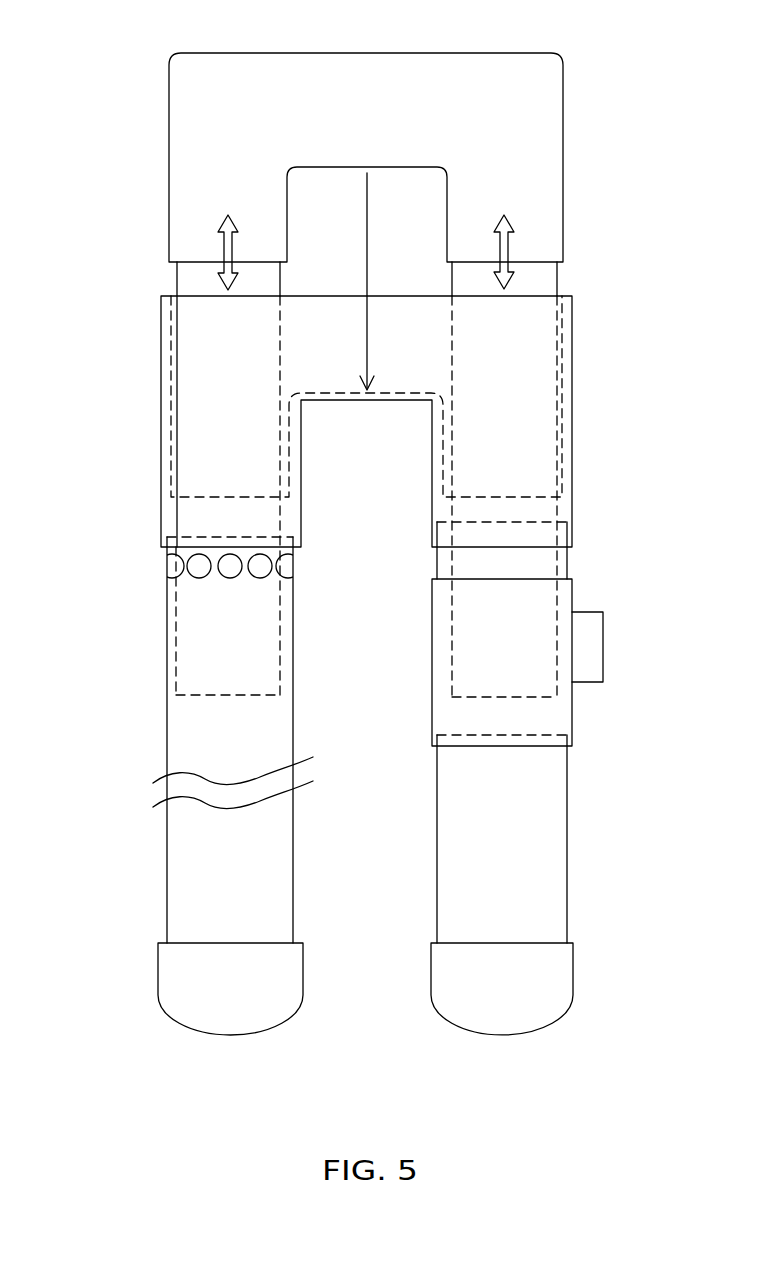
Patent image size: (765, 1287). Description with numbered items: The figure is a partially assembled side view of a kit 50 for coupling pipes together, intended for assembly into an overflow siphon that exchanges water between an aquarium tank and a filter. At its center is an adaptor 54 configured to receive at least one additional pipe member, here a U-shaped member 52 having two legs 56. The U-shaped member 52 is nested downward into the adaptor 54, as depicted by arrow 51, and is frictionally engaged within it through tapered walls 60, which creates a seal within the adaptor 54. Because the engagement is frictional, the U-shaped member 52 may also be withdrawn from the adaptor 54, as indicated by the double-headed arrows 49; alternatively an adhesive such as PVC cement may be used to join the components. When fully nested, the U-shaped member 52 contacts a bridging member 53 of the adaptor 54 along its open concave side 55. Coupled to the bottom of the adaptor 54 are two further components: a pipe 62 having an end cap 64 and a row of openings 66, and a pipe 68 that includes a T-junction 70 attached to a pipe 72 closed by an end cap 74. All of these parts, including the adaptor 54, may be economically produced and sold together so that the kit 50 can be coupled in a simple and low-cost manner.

The arrows 49 is at (223, 227).
The kit 50 is at (147, 53).
The arrow 51 is at (368, 211).
The U-shaped member 52 is at (356, 127).
The bridging member 53 is at (355, 401).
The adaptor 54 is at (315, 348).
The open concave side 55 is at (376, 392).
The legs 56 is at (287, 279).
The tapered walls 60 is at (572, 397).
The pipe 62 is at (168, 642).
The end cap 64 is at (216, 999).
The openings 66 is at (168, 564).
The pipe 68 is at (561, 563).
The T-junction 70 is at (588, 648).
The pipe 72 is at (558, 851).
The end cap 74 is at (500, 999).